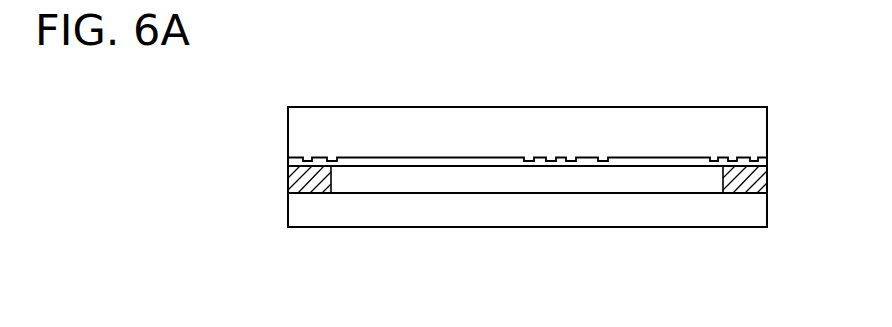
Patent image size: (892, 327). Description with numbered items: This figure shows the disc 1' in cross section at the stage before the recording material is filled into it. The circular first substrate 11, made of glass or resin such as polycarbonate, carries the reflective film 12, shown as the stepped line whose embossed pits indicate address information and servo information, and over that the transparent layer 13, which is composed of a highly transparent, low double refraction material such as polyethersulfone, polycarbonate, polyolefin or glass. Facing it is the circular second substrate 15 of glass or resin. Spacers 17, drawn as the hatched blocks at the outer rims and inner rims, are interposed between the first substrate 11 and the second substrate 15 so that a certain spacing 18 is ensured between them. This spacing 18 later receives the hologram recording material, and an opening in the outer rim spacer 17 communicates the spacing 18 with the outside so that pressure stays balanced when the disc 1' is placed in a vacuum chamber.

The disc 1' is at (531, 148).
The first substrate 11 is at (758, 130).
The reflective film 12 is at (641, 155).
The transparent layer 13 is at (291, 161).
The second substrate 15 is at (373, 212).
The spacers 17 is at (292, 186).
The spacing 18 is at (657, 180).